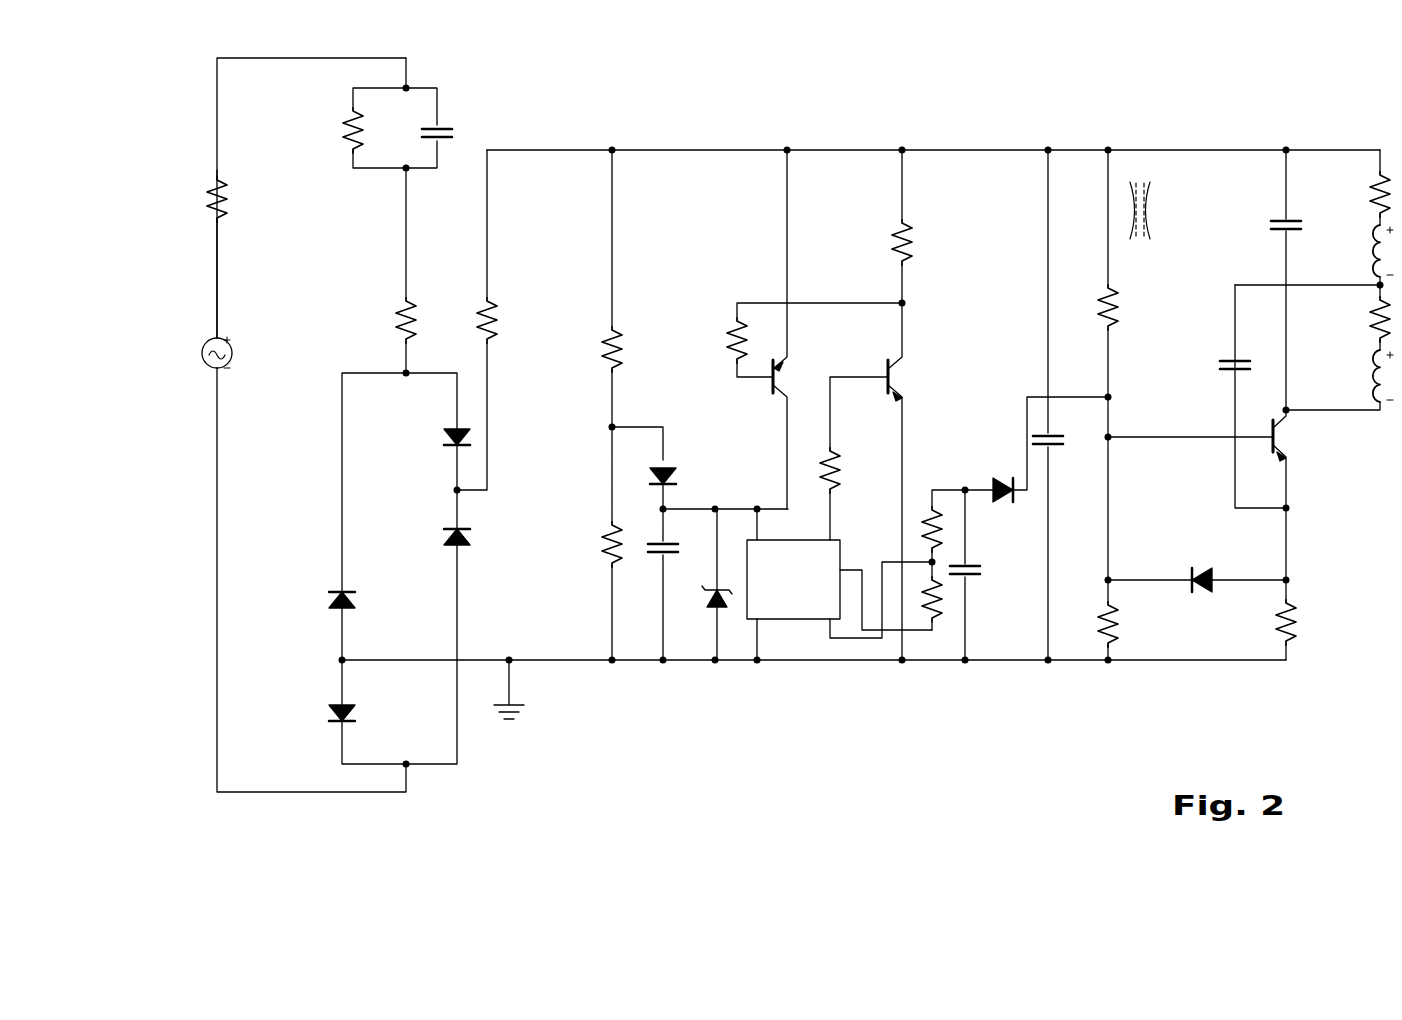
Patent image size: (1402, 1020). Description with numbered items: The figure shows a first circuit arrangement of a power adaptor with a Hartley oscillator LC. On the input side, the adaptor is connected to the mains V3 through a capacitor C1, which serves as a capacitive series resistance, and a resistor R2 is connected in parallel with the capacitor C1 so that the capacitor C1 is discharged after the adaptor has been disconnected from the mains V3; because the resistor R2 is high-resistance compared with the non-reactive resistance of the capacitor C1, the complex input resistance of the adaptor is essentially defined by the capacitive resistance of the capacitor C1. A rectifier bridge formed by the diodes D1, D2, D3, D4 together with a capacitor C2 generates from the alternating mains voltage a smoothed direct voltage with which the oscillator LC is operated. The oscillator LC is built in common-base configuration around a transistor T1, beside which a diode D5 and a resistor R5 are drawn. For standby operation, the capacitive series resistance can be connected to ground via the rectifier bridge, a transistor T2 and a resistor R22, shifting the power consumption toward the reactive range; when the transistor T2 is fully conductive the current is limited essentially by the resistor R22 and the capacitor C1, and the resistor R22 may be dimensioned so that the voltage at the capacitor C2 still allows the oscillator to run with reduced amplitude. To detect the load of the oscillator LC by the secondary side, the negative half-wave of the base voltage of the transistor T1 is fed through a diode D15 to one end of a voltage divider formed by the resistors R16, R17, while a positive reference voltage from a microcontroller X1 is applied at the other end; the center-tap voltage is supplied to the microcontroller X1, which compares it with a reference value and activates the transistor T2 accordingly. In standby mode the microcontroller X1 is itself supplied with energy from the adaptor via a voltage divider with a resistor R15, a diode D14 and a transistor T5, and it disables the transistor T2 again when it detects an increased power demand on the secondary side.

The mains V3 is at (205, 350).
The resistor R2 is at (340, 131).
The capacitor C1 is at (455, 130).
The diode D1 is at (330, 598).
The diode D2 is at (445, 535).
The diode D3 is at (330, 710).
The diode D4 is at (445, 440).
The resistor R15 is at (622, 346).
The diode D14 is at (678, 480).
The transistor T5 is at (790, 375).
The microcontroller X1 is at (798, 621).
The transistor T2 is at (900, 375).
The resistor R22 is at (915, 240).
The diode D15 is at (1003, 476).
The capacitor C2 is at (1060, 448).
The resistor R16 is at (943, 625).
The resistor R17 is at (991, 652).
The diode D5 is at (1202, 595).
The transistor T1 is at (1290, 440).
The resistor R5 is at (1298, 622).
The oscillator LC is at (1368, 246).